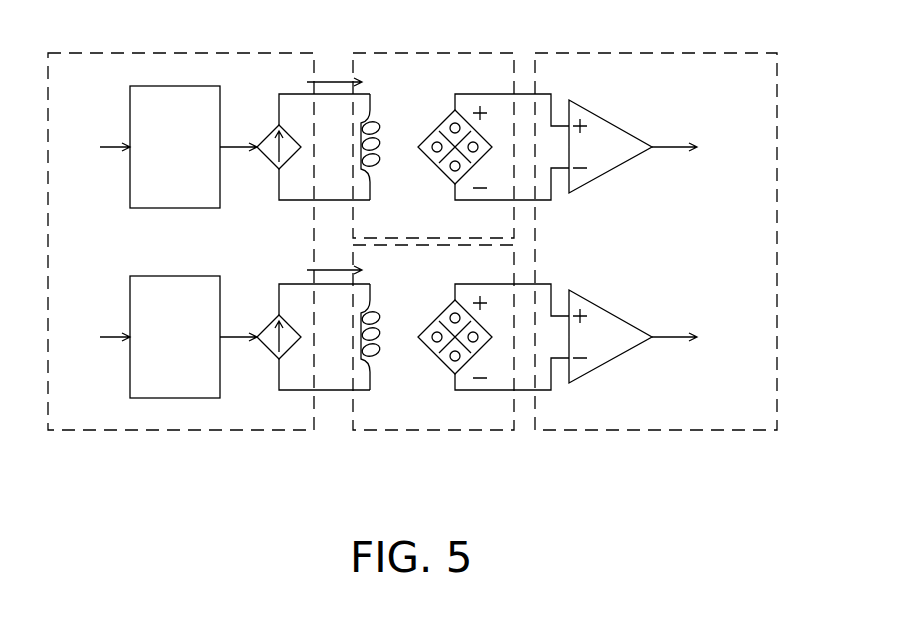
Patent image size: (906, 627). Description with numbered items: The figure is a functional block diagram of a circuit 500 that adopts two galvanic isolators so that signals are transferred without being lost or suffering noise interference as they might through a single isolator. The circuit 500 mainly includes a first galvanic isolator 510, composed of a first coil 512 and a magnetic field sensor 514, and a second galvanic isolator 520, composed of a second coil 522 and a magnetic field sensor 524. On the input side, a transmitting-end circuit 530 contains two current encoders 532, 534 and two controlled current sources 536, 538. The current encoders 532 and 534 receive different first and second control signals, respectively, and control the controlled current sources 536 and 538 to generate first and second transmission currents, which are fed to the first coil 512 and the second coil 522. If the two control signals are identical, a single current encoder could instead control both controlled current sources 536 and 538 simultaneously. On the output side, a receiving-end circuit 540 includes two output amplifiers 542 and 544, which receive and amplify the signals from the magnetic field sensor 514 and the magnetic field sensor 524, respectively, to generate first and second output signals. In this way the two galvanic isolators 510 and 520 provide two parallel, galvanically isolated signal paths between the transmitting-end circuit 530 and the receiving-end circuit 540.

The circuit 500 is at (714, 516).
The galvanic isolator 510 is at (395, 48).
The first coil 512 is at (378, 124).
The magnetic field sensor 514 is at (447, 118).
The galvanic isolator 520 is at (397, 433).
The second coil 522 is at (378, 314).
The magnetic field sensor 524 is at (447, 308).
The transmitting-end circuit 530 is at (126, 48).
The current encoder 532 is at (198, 86).
The current encoder 534 is at (198, 398).
The controlled current source 536 is at (266, 157).
The controlled current source 538 is at (264, 343).
The receiving-end circuit 540 is at (565, 48).
The output amplifier 542 is at (612, 123).
The output amplifier 544 is at (612, 313).